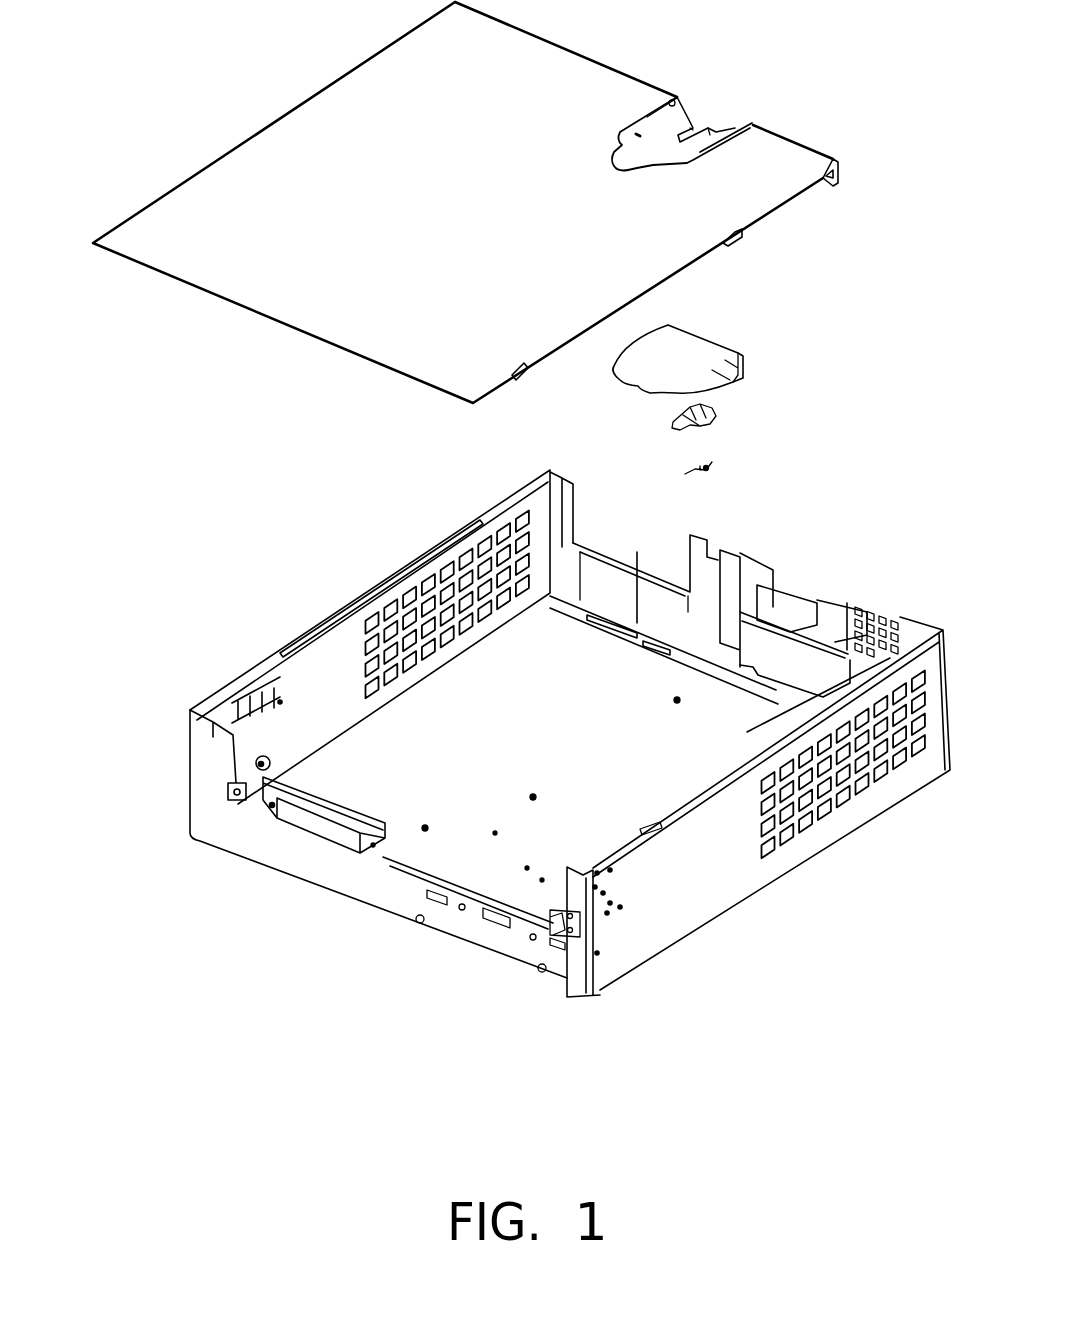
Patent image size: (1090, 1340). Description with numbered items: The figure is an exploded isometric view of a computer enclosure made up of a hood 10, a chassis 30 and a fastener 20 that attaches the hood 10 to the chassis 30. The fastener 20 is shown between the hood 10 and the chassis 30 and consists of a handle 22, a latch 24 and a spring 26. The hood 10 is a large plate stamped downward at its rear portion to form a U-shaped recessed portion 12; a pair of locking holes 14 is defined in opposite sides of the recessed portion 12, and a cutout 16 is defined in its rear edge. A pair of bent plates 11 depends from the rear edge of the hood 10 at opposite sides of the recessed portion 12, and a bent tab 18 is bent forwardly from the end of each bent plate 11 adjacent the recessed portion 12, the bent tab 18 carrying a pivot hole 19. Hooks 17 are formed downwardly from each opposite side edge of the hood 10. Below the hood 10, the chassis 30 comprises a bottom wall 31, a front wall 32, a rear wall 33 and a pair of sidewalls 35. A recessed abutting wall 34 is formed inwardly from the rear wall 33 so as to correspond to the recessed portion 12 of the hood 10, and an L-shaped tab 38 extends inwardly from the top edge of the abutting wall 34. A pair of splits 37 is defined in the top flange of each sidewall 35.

The hood 10 is at (297, 275).
The bent plate 11 is at (838, 179).
The recessed portion 12 is at (653, 130).
The locking hole 14 is at (716, 132).
The cutout 16 is at (710, 134).
The hook 17 is at (515, 372).
The bent tab 18 is at (672, 100).
The pivot hole 19 is at (693, 128).
The fastener 20 is at (769, 394).
The handle 22 is at (717, 353).
The latch 24 is at (710, 404).
The spring 26 is at (683, 473).
The chassis 30 is at (570, 737).
The bottom wall 31 is at (517, 843).
The front wall 32 is at (378, 892).
The rear wall 33 is at (655, 595).
The abutting wall 34 is at (740, 567).
The sidewall 35 is at (660, 922).
The split 37 is at (653, 830).
The L-shaped tab 38 is at (800, 597).